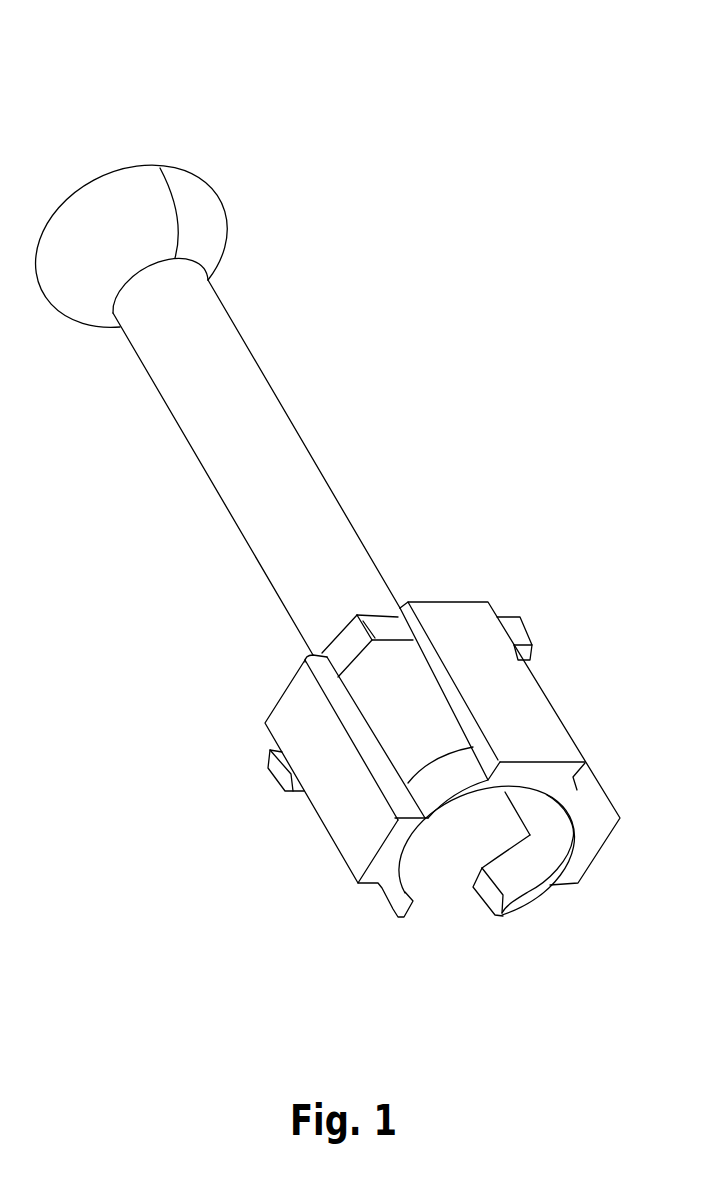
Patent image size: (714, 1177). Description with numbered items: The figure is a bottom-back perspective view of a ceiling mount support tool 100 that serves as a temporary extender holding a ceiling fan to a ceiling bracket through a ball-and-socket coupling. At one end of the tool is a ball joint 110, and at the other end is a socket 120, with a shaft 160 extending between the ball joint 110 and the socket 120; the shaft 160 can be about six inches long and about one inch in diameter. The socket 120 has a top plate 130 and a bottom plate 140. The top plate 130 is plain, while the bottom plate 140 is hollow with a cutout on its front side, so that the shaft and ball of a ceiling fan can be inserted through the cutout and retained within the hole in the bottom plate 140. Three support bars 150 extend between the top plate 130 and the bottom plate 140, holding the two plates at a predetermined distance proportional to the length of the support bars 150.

The ceiling mount support tool 100 is at (515, 137).
The ball joint 110 is at (187, 187).
The socket 120 is at (530, 560).
The top plate 130 is at (522, 623).
The bottom plate 140 is at (492, 913).
The support bars 150 is at (552, 700).
The shaft 160 is at (293, 468).